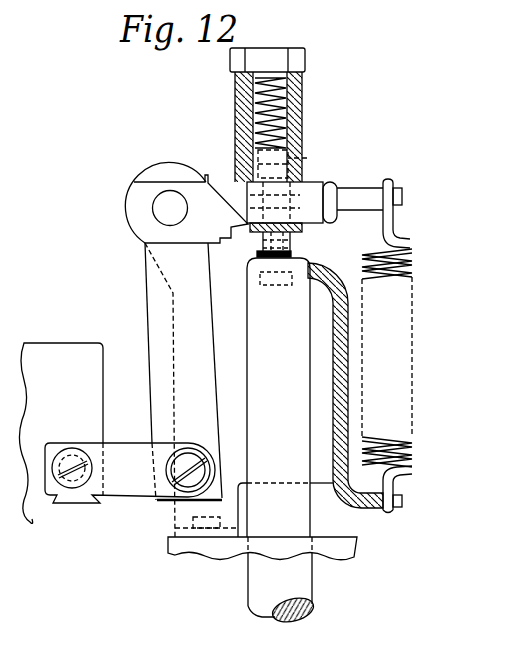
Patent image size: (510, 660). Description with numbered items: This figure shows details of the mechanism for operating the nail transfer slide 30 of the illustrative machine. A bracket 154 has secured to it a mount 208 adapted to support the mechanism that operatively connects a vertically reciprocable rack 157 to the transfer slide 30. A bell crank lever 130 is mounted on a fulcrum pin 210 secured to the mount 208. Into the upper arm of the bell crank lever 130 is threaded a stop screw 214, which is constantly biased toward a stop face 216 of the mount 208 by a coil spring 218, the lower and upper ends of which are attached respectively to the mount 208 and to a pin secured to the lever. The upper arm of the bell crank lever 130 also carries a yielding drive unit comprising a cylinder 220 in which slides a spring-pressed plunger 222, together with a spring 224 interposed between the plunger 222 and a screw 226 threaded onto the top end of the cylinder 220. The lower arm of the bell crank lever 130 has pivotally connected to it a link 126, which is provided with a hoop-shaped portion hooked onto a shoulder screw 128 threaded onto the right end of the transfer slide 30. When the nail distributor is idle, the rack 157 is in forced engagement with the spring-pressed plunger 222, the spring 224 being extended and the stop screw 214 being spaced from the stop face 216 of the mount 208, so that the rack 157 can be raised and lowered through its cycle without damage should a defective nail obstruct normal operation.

The transfer slide 30 is at (55, 343).
The link 126 is at (133, 498).
The shoulder screw 128 is at (66, 452).
The bell crank lever 130 is at (219, 240).
The bracket 154 is at (357, 543).
The rack 157 is at (312, 593).
The mount 208 is at (172, 310).
The fulcrum pin 210 is at (170, 190).
The stop screw 214 is at (307, 158).
The stop face 216 is at (266, 287).
The coil spring 218 is at (413, 249).
The cylinder 220 is at (305, 127).
The spring-pressed plunger 222 is at (292, 243).
The spring 224 is at (268, 93).
The screw 226 is at (276, 52).